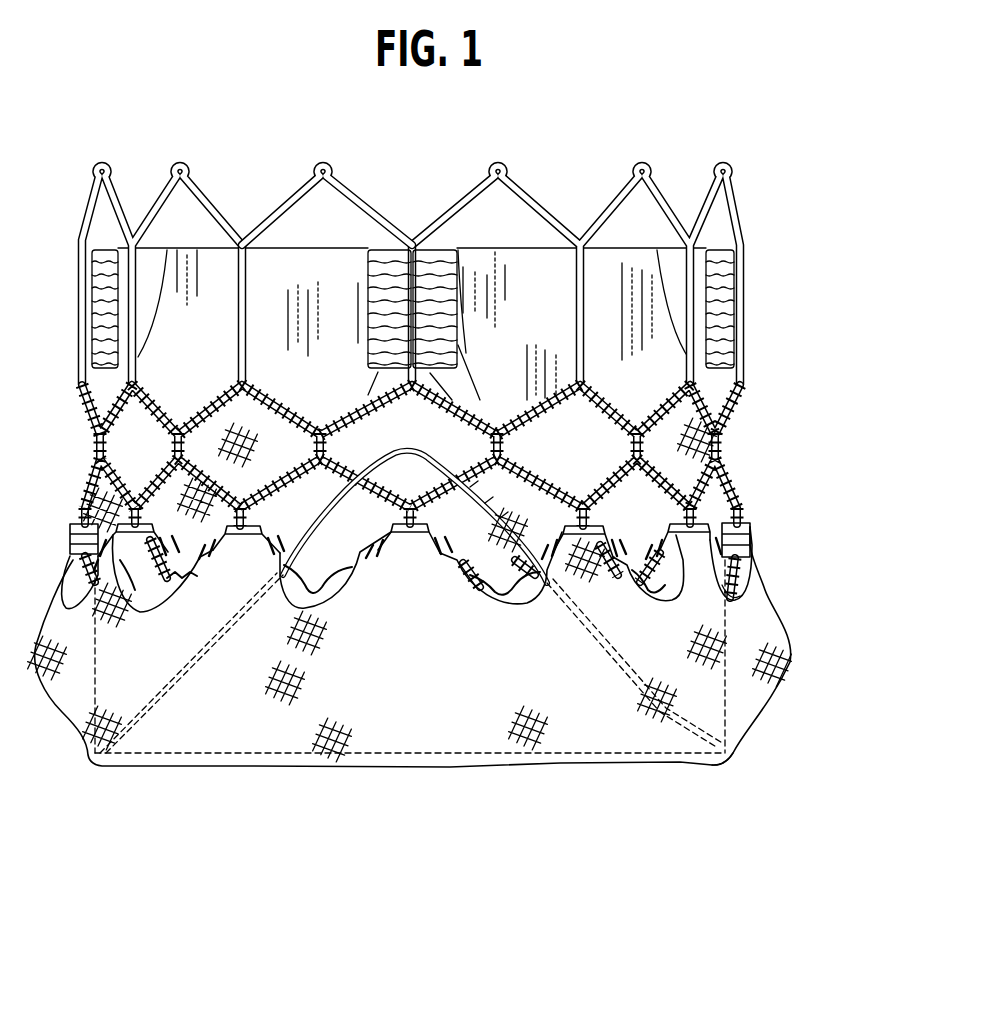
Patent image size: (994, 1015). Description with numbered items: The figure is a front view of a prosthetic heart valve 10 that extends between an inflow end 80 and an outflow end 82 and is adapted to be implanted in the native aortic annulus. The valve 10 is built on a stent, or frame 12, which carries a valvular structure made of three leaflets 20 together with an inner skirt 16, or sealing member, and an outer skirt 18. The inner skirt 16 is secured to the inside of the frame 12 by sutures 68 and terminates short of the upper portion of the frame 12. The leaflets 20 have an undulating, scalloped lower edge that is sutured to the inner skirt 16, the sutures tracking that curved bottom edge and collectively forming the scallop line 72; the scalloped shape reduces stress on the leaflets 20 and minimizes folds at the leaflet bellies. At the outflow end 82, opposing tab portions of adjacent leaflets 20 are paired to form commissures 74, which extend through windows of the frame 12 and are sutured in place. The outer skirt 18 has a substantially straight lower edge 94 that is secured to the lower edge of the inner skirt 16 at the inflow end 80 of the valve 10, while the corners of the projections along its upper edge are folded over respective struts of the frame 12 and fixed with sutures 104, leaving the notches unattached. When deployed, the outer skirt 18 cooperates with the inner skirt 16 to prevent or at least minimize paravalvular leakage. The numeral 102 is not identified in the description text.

The prosthetic heart valve 10 is at (668, 136).
The frame 12 is at (441, 267).
The inner skirt 16 is at (655, 532).
The outer skirt 18 is at (785, 667).
The leaflets 20 is at (210, 281).
The sutures 68 is at (630, 400).
The scallop line 72 is at (228, 640).
The commissure 74 is at (438, 302).
The inflow end 80 is at (443, 767).
The outflow end 82 is at (290, 200).
The lower edge 94 is at (733, 753).
The commissure tab 102 is at (737, 590).
The sutures 104 is at (750, 527).